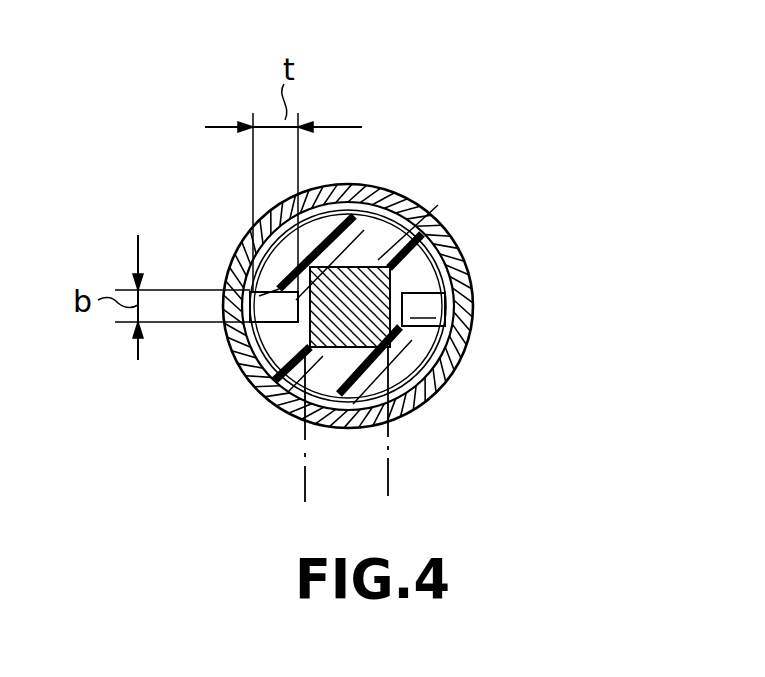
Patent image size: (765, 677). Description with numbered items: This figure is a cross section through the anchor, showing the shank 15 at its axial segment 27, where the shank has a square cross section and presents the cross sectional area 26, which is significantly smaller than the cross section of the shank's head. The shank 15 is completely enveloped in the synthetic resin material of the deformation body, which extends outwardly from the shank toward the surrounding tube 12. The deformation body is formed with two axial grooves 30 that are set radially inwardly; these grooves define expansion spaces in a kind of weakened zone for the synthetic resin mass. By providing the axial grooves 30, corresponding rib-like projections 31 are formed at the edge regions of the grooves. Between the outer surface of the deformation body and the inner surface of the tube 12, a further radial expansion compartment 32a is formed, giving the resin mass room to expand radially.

The tube 12 is at (358, 184).
The shank 15 is at (392, 266).
The cross sectional area 26 is at (300, 390).
The axial segment 27 is at (405, 388).
The axial grooves 30 is at (433, 307).
The rib-like projections 31 is at (268, 285).
The radial expansion compartment 32a is at (372, 212).